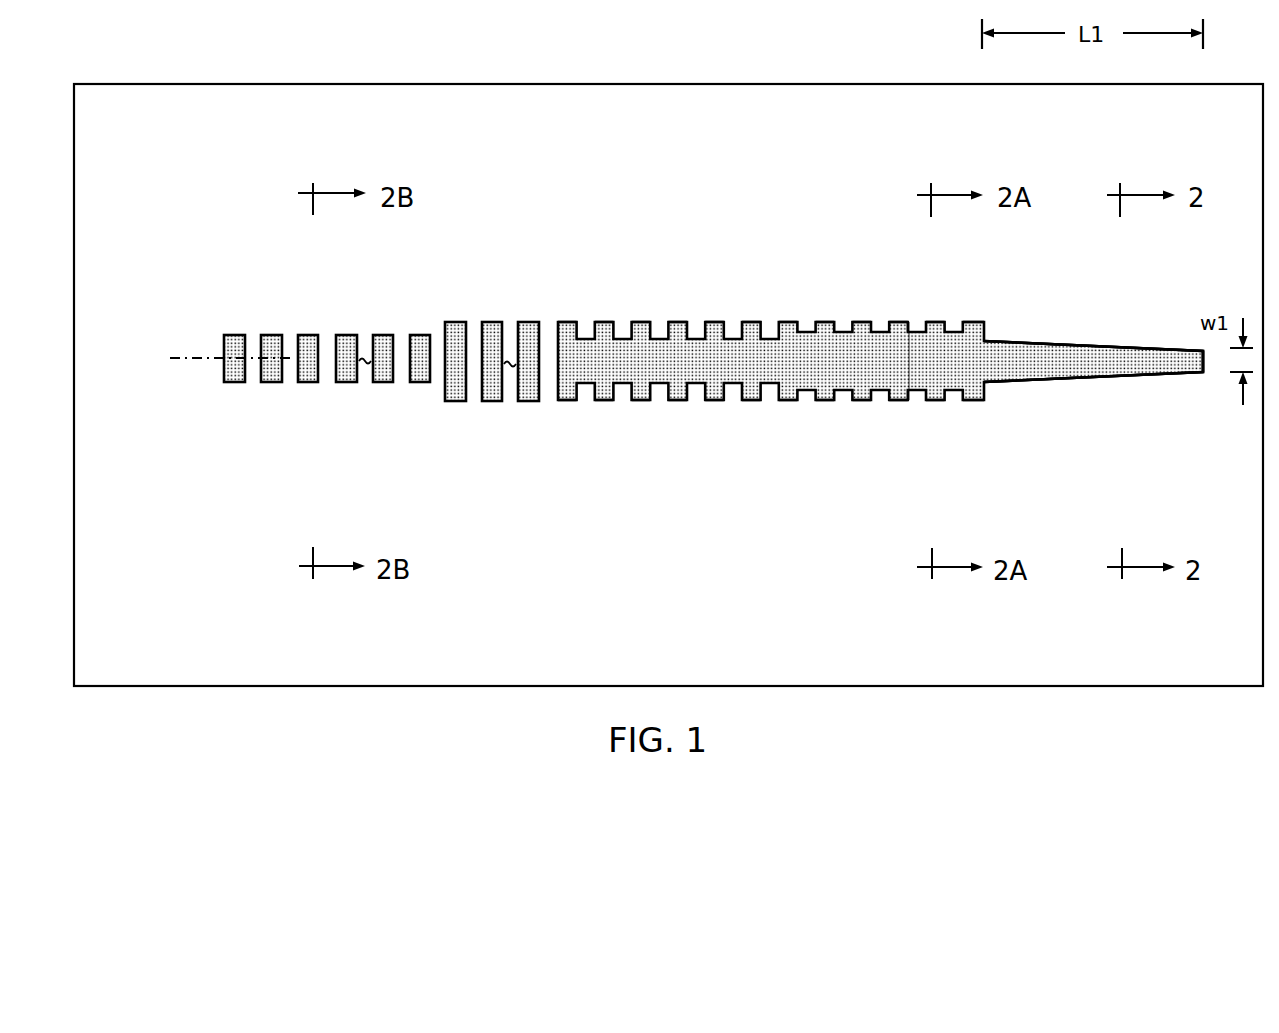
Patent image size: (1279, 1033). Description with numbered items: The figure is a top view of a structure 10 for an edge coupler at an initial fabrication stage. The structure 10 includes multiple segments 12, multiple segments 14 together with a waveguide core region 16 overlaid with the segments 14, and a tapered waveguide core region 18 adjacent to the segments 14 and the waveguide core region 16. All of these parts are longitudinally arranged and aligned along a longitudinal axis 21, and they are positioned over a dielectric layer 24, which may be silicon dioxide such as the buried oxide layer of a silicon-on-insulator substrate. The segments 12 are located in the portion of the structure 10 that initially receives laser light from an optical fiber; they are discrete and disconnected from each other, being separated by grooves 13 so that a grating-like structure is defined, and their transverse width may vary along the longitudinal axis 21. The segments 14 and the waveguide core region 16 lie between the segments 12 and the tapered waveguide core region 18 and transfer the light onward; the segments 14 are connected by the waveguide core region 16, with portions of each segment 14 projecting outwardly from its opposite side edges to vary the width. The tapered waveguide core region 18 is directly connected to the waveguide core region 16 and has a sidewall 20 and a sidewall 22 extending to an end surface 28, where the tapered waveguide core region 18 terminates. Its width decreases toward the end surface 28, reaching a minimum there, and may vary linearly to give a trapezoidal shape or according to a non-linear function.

The structure 10 is at (192, 176).
The segments 12 is at (386, 360).
The grooves 13 is at (514, 362).
The segments 14 is at (608, 328).
The waveguide core region 16 is at (803, 362).
The tapered waveguide core region 18 is at (1060, 360).
The sidewall 20 is at (1120, 347).
The longitudinal axis 21 is at (205, 357).
The sidewall 22 is at (1117, 376).
The dielectric layer 24 is at (146, 618).
The end surface 28 is at (1205, 366).